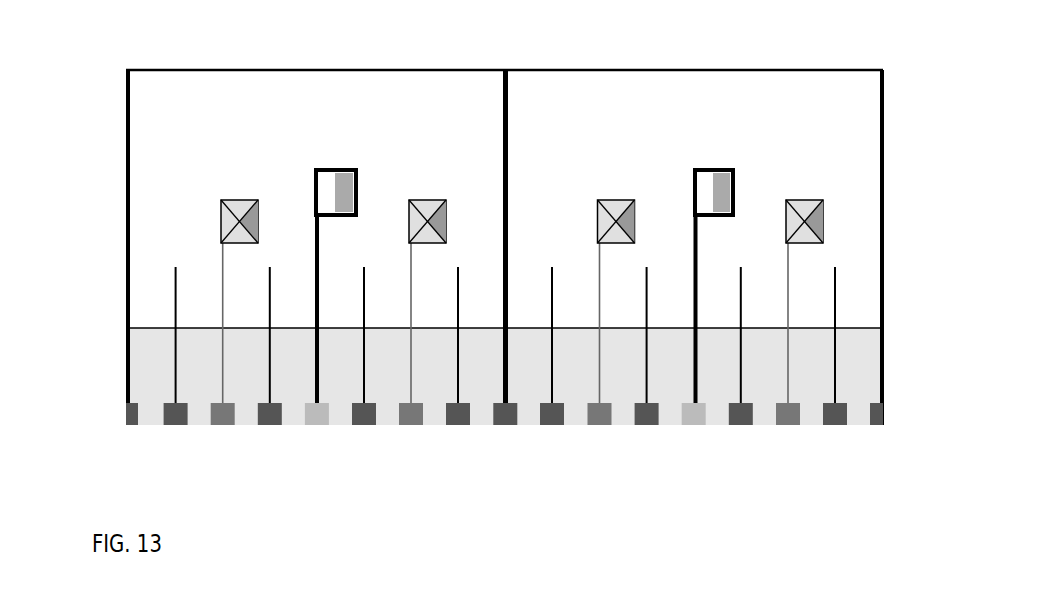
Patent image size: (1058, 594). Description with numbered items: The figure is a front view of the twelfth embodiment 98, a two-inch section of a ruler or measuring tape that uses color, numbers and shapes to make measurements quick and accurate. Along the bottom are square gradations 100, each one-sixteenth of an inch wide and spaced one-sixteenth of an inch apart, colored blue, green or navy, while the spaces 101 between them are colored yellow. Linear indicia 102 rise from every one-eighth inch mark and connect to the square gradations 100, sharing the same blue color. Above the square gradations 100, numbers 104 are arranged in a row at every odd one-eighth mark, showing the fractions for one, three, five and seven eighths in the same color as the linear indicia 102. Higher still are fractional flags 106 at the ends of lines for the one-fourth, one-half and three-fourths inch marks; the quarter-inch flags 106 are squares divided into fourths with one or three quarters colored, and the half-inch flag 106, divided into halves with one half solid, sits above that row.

The twelfth embodiment 98 is at (919, 248).
The square gradations 100 is at (275, 428).
The spaces 101 is at (764, 408).
The linear indicia 102 is at (350, 157).
The numbers 104 is at (153, 286).
The fractional flags 106 is at (226, 221).